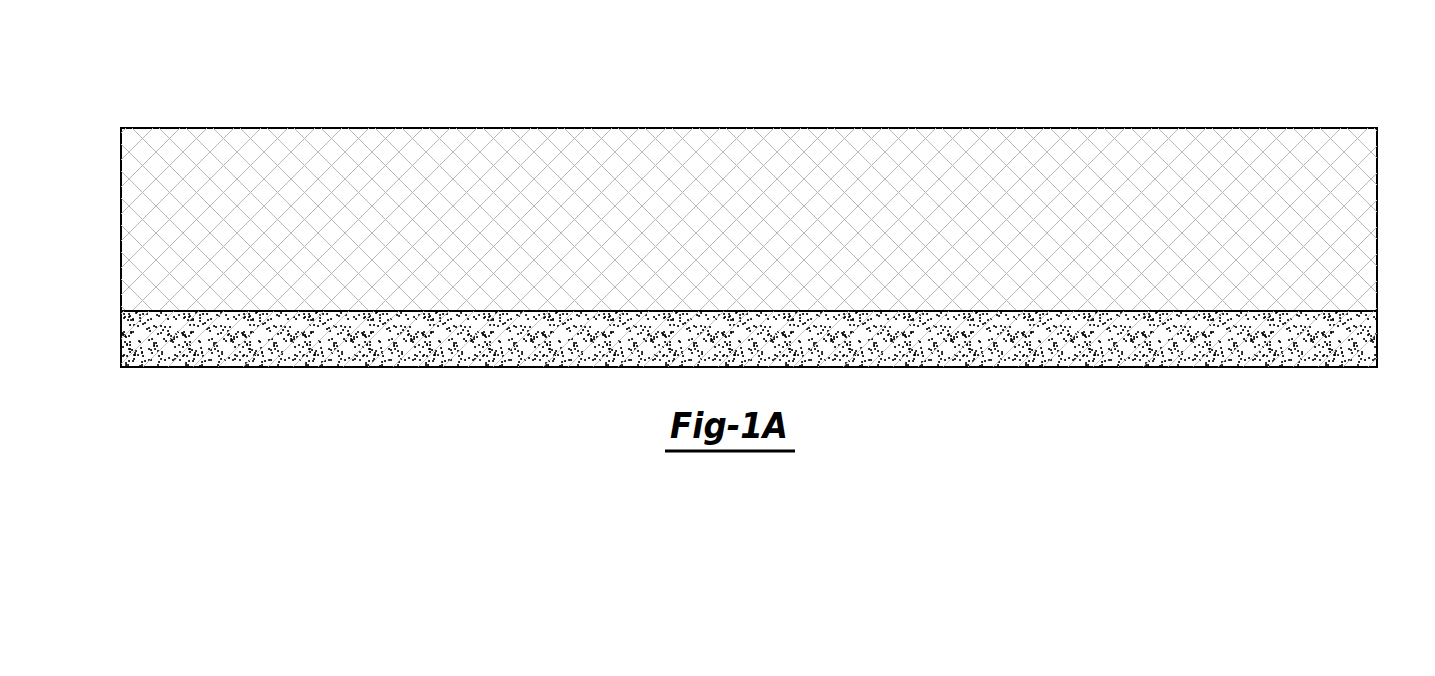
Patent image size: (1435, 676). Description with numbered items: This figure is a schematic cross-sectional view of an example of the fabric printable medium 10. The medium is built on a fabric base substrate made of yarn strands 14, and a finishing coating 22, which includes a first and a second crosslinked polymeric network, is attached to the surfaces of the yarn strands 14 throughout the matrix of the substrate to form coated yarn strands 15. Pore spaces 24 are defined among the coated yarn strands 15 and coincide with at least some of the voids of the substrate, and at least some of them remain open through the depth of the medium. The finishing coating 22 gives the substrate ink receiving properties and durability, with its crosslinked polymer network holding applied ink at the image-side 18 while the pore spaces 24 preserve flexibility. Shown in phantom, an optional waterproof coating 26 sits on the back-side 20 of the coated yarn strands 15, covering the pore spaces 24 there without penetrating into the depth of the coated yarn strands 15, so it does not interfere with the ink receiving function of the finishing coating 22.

The fabric printable medium 10 is at (1357, 82).
The yarn strands 14 is at (427, 147).
The coated yarn strands 15 is at (537, 149).
The image-side 18 is at (1133, 128).
The back-side 20 is at (1097, 315).
The finishing coating 22 is at (243, 140).
The pore spaces 24 is at (352, 145).
The waterproof coating 26 is at (122, 354).